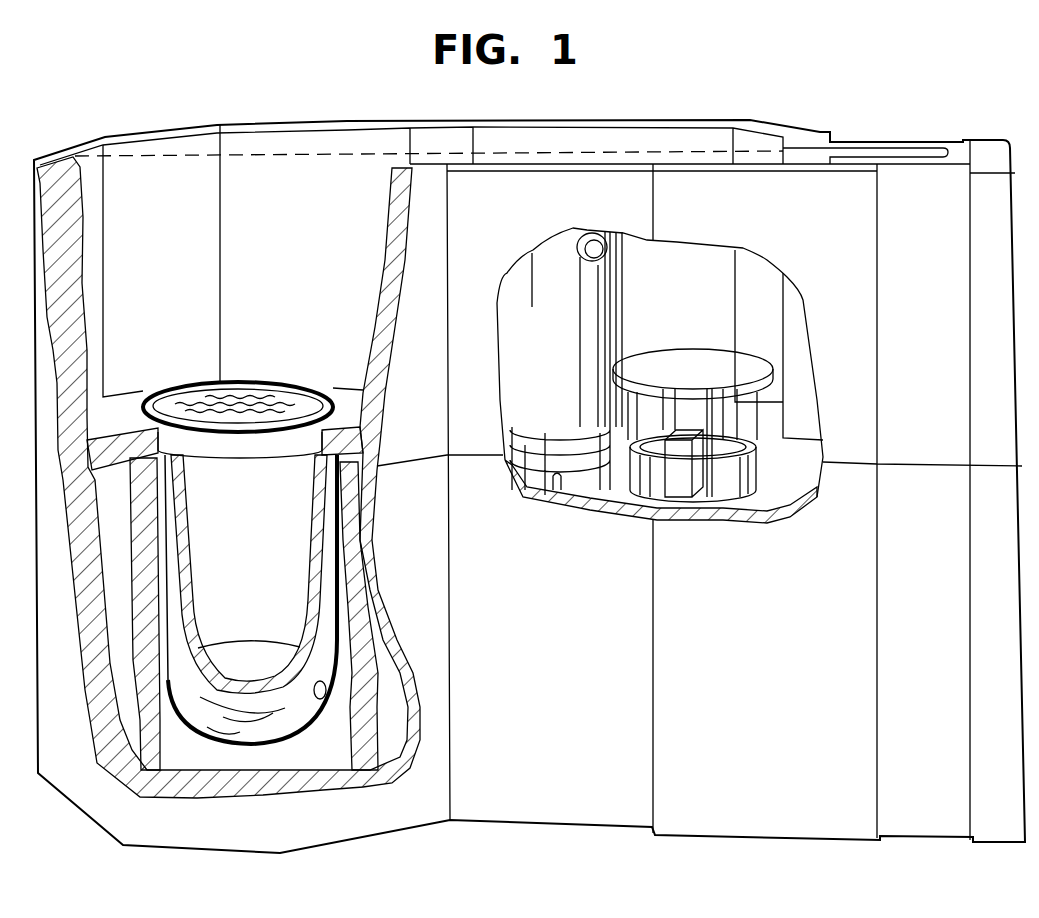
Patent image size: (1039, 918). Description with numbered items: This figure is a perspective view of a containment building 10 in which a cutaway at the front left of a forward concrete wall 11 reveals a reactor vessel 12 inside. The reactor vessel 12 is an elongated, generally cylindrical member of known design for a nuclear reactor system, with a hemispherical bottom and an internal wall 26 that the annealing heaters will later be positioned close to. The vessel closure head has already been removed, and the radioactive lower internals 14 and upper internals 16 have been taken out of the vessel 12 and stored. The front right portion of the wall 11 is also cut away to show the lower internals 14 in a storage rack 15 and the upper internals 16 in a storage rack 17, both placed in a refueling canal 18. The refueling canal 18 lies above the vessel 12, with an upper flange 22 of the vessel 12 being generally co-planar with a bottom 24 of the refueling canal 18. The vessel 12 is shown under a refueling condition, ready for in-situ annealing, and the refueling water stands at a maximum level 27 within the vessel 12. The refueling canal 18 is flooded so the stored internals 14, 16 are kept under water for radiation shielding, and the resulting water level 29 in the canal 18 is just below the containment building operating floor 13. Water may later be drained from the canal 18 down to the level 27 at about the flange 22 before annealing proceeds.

The containment building 10 is at (189, 223).
The forward concrete wall 11 is at (556, 724).
The reactor vessel 12 is at (288, 713).
The containment building operating floor 13 is at (806, 134).
The lower internals 14 is at (516, 287).
The storage rack 15 is at (580, 490).
The upper internals 16 is at (674, 358).
The storage rack 17 is at (725, 503).
The refueling canal 18 is at (695, 260).
The upper flange 22 is at (183, 383).
The bottom 24 is at (762, 503).
The internal wall 26 is at (340, 563).
The maximum level 27 is at (265, 398).
The water level 29 is at (657, 152).